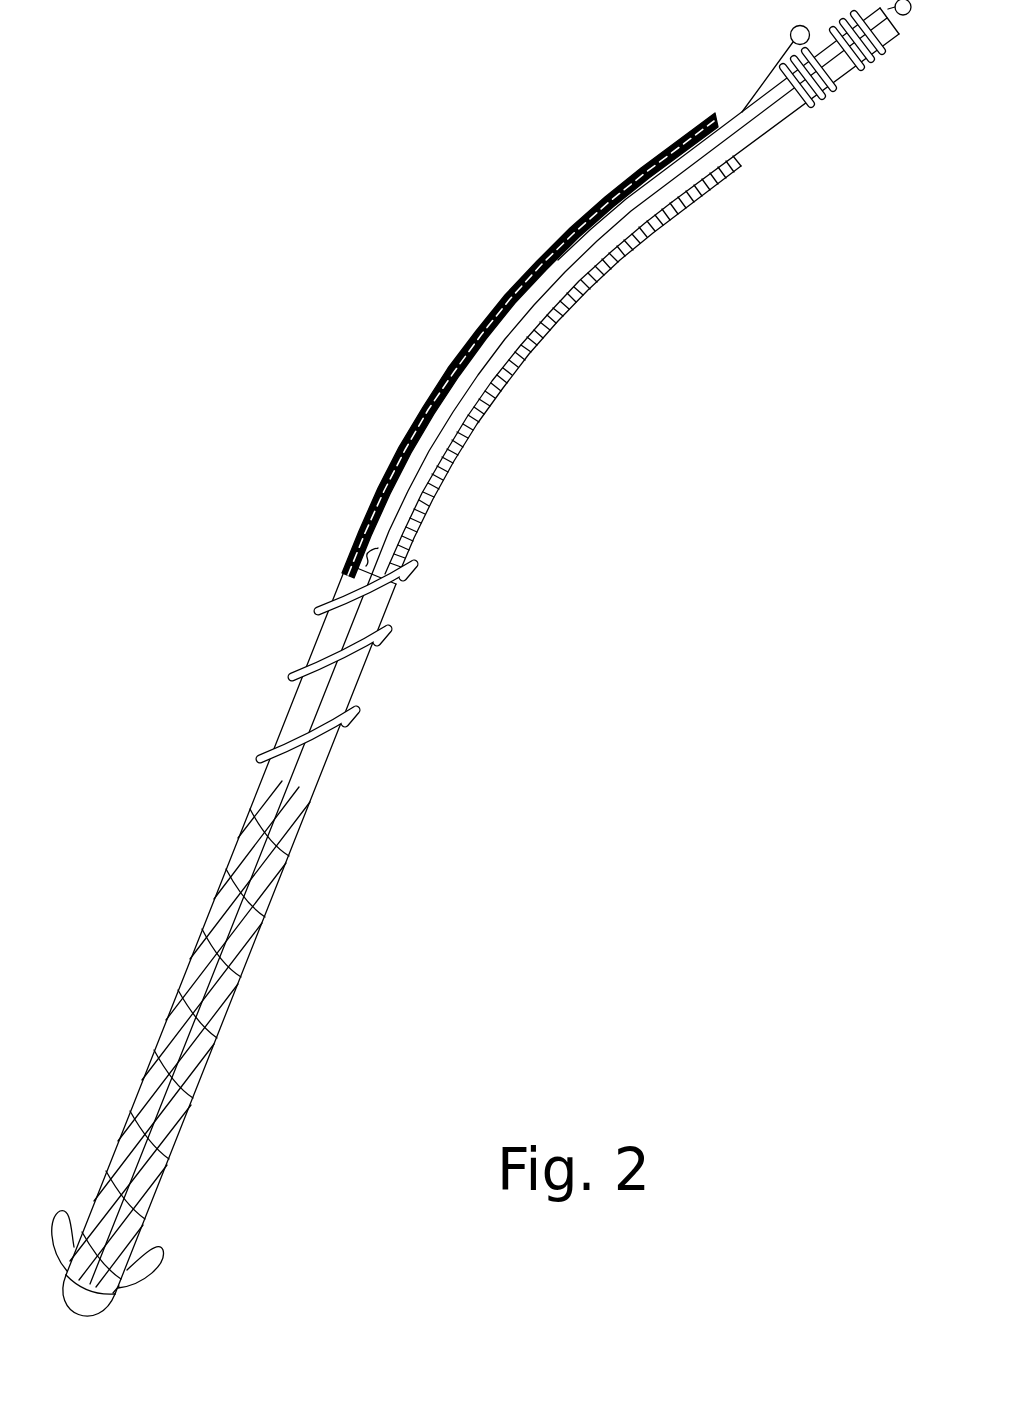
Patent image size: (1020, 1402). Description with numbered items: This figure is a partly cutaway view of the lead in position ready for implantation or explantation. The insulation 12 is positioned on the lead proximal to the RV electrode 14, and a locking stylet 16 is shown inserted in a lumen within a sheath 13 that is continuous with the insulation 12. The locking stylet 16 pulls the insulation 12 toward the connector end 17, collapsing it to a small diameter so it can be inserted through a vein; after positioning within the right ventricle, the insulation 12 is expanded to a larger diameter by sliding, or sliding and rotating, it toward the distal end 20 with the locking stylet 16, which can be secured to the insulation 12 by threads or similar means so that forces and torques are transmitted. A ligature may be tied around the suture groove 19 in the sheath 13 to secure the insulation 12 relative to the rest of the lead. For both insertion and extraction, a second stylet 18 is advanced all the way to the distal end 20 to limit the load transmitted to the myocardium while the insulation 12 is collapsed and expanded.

The insulation 12 is at (294, 675).
The sheath 13 is at (503, 297).
The RV electrode 14 is at (170, 1008).
The locking stylet 16 is at (742, 110).
The connector end 17 is at (834, 90).
The second stylet 18 is at (751, 125).
The suture groove 19 is at (738, 166).
The distal end 20 is at (105, 1312).